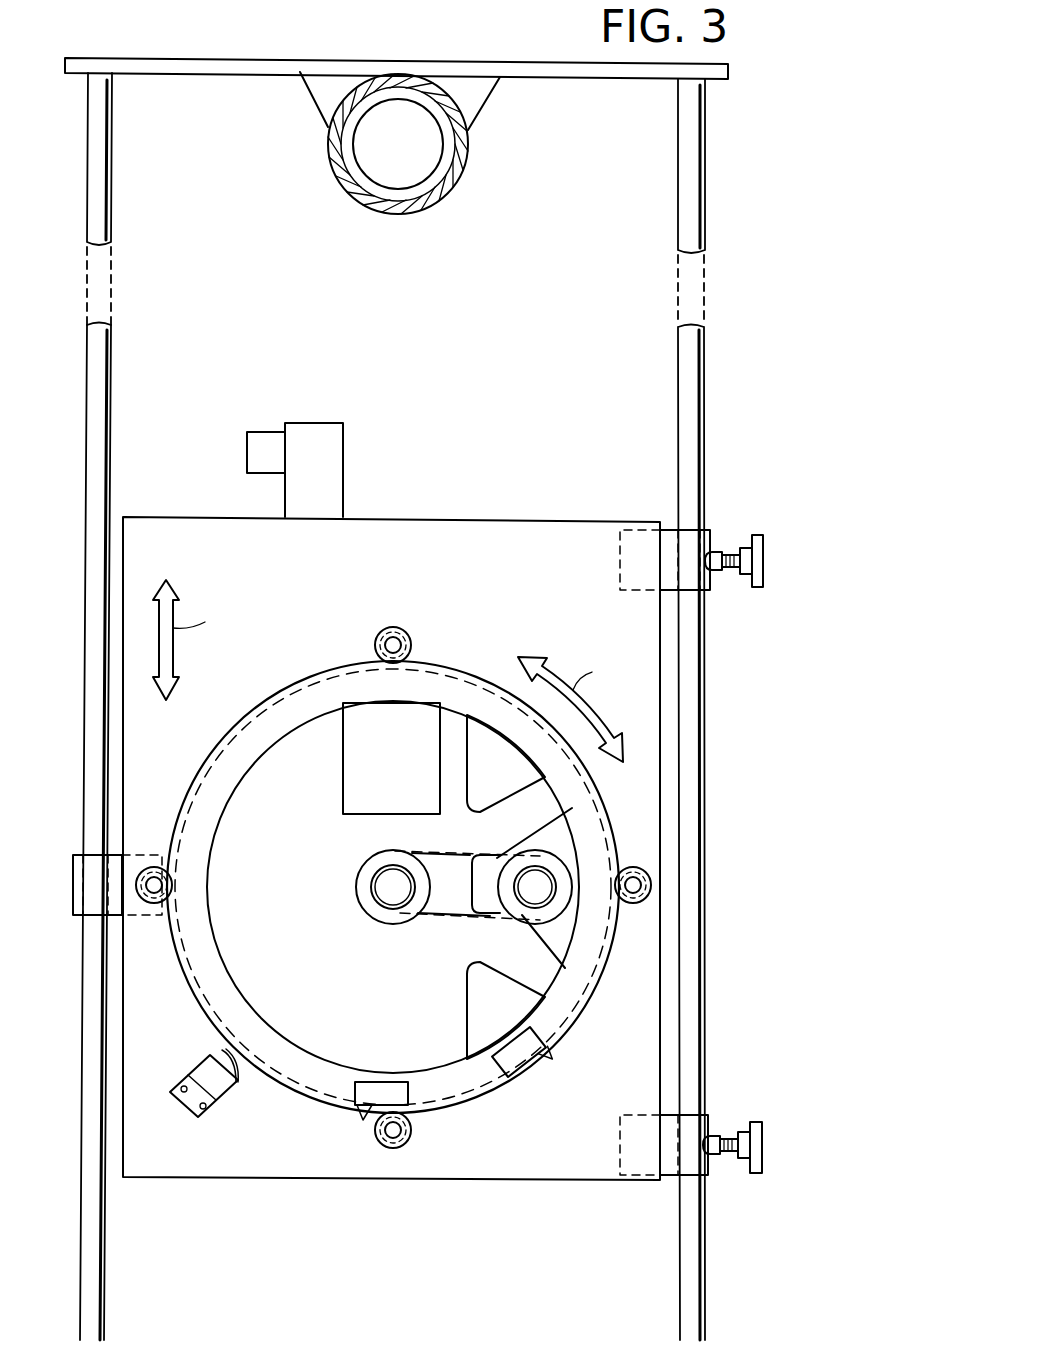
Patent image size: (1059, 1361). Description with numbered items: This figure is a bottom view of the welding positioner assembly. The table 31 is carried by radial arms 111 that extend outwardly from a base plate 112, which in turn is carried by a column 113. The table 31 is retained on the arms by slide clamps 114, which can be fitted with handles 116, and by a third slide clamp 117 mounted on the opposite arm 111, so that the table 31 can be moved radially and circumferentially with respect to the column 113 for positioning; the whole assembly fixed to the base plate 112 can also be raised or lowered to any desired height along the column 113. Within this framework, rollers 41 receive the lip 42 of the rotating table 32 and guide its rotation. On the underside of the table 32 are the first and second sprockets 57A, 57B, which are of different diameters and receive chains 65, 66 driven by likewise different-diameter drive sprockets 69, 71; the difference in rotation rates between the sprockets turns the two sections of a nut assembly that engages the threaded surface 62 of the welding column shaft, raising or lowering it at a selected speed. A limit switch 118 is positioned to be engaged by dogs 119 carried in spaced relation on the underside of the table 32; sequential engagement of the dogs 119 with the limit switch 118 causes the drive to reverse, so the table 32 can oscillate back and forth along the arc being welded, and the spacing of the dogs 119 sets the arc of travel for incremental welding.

The table 31 is at (550, 578).
The table 32 is at (298, 802).
The rollers 41 is at (403, 636).
The lip 42 is at (432, 665).
The first sprocket 57A is at (375, 905).
The second sprocket 57B is at (380, 887).
The threaded surface 62 is at (387, 883).
The chain 65 is at (430, 853).
The chain 66 is at (435, 915).
The sprocket 69 is at (535, 917).
The sprocket 71 is at (548, 845).
The radial arms 111 is at (110, 362).
The base plate 112 is at (512, 62).
The column 113 is at (455, 148).
The slide clamps 114 is at (692, 543).
The handles 116 is at (763, 561).
The third slide clamp 117 is at (85, 877).
The limit switch 118 is at (215, 1097).
The dogs 119 is at (398, 1058).